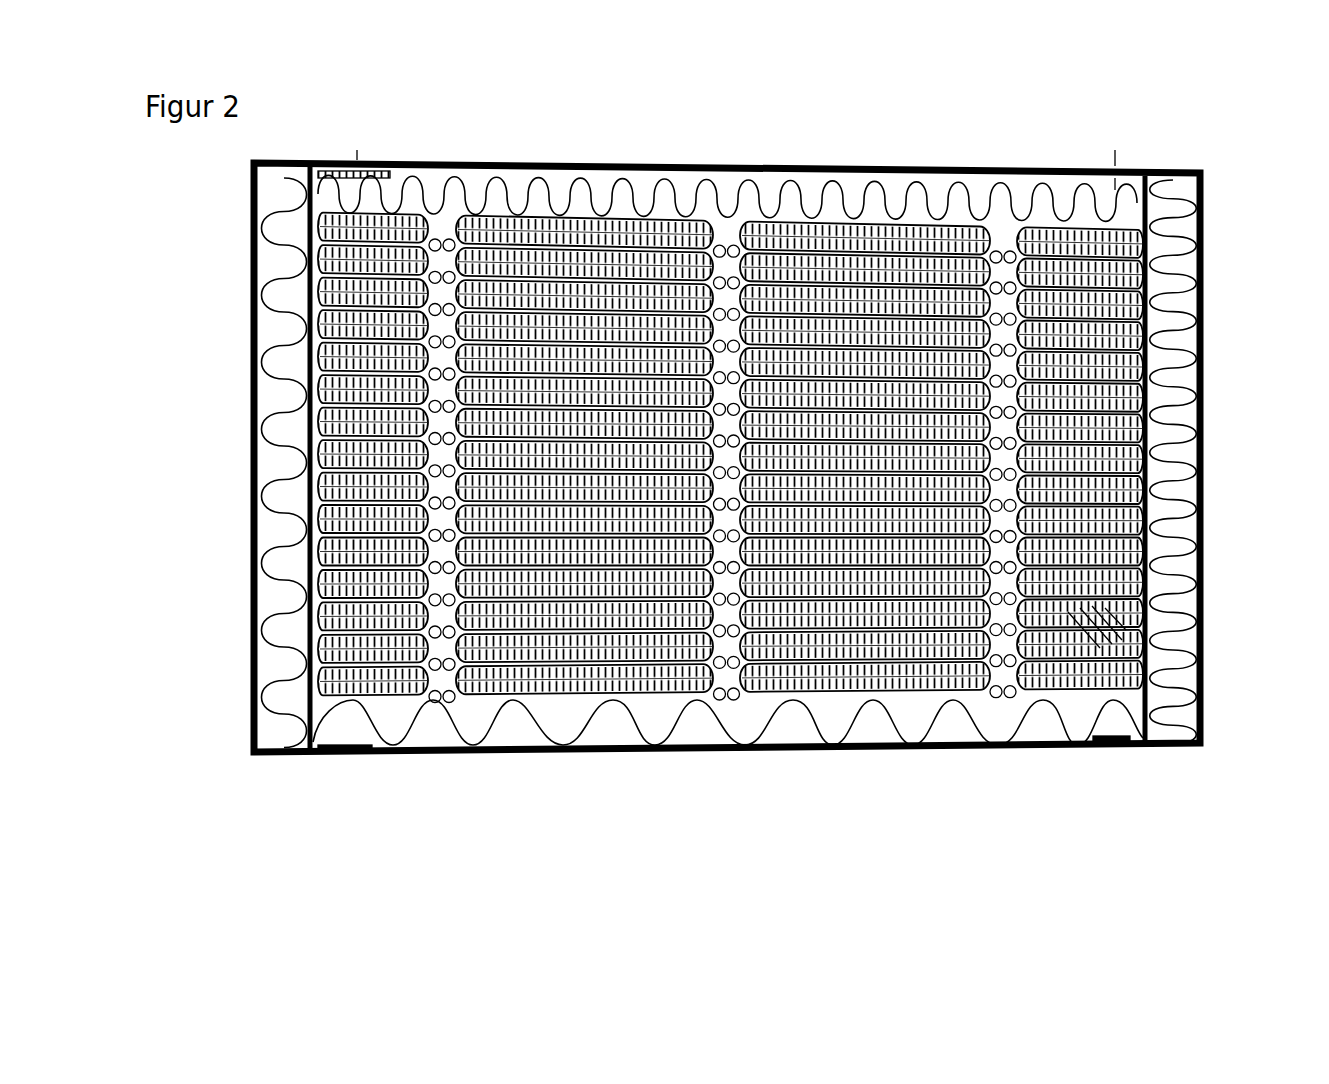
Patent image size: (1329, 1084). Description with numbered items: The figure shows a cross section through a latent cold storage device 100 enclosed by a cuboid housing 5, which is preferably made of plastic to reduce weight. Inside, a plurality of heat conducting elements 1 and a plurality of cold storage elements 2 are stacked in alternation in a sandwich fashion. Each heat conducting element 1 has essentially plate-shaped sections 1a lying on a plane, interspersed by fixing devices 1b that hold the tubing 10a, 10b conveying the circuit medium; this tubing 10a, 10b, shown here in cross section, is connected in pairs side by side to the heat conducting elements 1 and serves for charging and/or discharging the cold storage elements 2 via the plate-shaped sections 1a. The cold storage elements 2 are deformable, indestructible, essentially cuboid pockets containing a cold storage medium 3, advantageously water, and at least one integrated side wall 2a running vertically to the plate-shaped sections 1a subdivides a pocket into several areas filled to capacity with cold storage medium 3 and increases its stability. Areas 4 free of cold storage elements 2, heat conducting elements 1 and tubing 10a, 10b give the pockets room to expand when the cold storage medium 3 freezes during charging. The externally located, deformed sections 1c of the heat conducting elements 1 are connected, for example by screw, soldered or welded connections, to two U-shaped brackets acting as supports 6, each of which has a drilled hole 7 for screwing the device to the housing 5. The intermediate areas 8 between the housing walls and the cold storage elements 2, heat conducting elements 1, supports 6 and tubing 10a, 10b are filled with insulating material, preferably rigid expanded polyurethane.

The latent cold storage device 100 is at (700, 538).
The heat conducting element 1 is at (650, 640).
The plate-shaped section 1a is at (855, 262).
The fixing device 1b is at (1000, 385).
The deformed section 1c is at (307, 233).
The cold storage element 2 is at (1137, 380).
The side wall 2a is at (1113, 650).
The cold storage medium 3 is at (865, 456).
The area 4 is at (1145, 240).
The housing 5 is at (410, 757).
The support 6 is at (1147, 483).
The drilled hole 7 is at (343, 757).
The intermediate area 8 is at (733, 217).
The tubing conveying the circuit medium 10a is at (723, 700).
The tubing conveying the circuit medium 10b is at (733, 700).